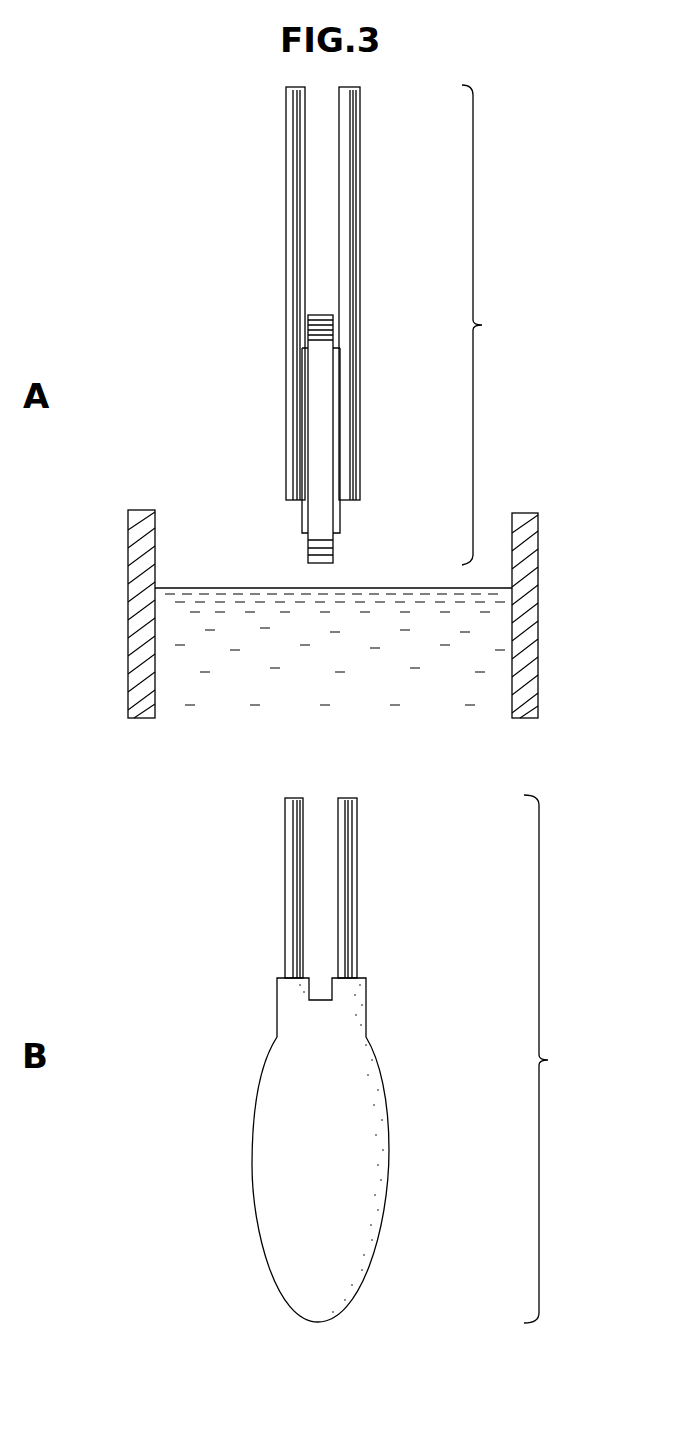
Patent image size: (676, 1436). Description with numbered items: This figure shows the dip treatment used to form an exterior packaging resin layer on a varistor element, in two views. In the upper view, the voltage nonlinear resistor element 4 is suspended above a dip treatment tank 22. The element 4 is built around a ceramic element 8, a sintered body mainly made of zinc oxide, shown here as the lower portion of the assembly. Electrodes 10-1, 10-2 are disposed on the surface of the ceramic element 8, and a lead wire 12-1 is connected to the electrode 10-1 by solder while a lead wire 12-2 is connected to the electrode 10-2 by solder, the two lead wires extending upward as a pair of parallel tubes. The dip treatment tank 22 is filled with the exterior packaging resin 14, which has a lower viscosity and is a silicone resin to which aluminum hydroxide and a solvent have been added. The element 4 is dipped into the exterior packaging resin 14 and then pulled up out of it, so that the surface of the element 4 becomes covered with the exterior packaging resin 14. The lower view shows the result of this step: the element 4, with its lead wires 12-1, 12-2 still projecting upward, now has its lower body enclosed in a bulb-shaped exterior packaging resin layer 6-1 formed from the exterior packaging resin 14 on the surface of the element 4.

The voltage nonlinear resistor element 4 is at (516, 704).
The lead wire 12-1 is at (286, 150).
The lead wire 12-2 is at (360, 150).
The electrode 10-1 is at (303, 418).
The electrode 10-2 is at (336, 418).
The ceramic element 8 is at (322, 563).
The exterior packaging resin 14 is at (192, 588).
The dip treatment tank 22 is at (540, 630).
The exterior packaging resin layer 6-1 is at (389, 1135).